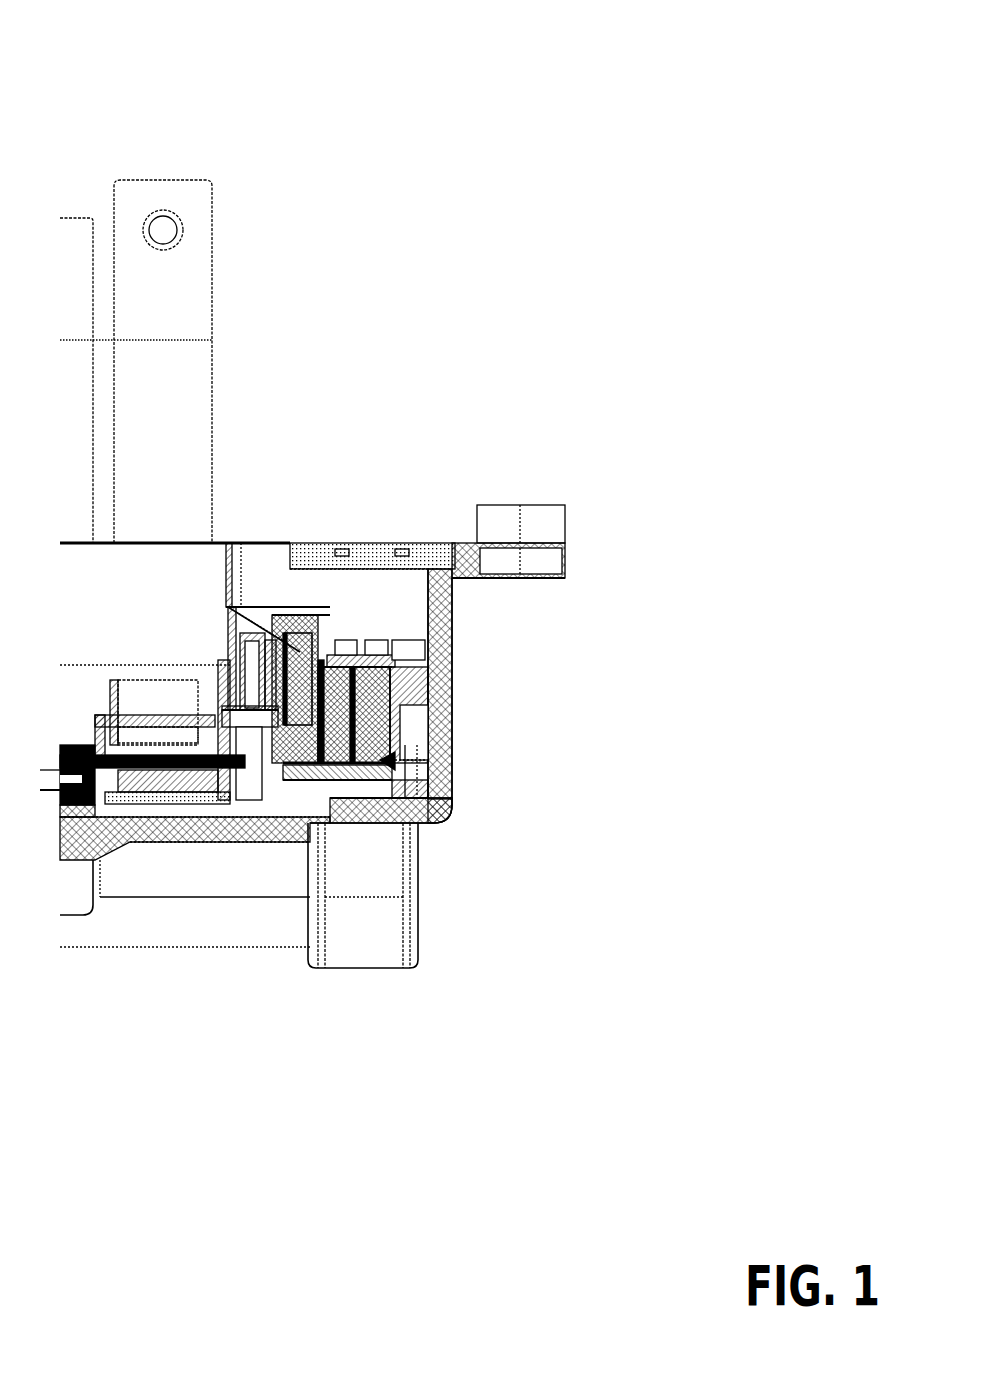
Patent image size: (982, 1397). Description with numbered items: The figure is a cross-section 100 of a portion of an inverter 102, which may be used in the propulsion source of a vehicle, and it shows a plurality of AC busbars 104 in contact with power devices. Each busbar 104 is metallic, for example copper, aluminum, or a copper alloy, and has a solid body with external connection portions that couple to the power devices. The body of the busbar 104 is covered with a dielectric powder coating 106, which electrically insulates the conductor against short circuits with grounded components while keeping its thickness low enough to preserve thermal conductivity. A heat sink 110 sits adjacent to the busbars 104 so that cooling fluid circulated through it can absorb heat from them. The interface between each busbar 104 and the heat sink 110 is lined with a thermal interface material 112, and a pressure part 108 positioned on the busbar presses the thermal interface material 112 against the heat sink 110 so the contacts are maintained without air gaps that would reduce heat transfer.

The cross-section 100 is at (730, 50).
The inverter 102 is at (308, 368).
The busbar 104 is at (230, 607).
The dielectric powder coating 106 is at (432, 660).
The pressure part 108 is at (350, 640).
The heat sink 110 is at (443, 800).
The thermal interface material 112 is at (392, 756).